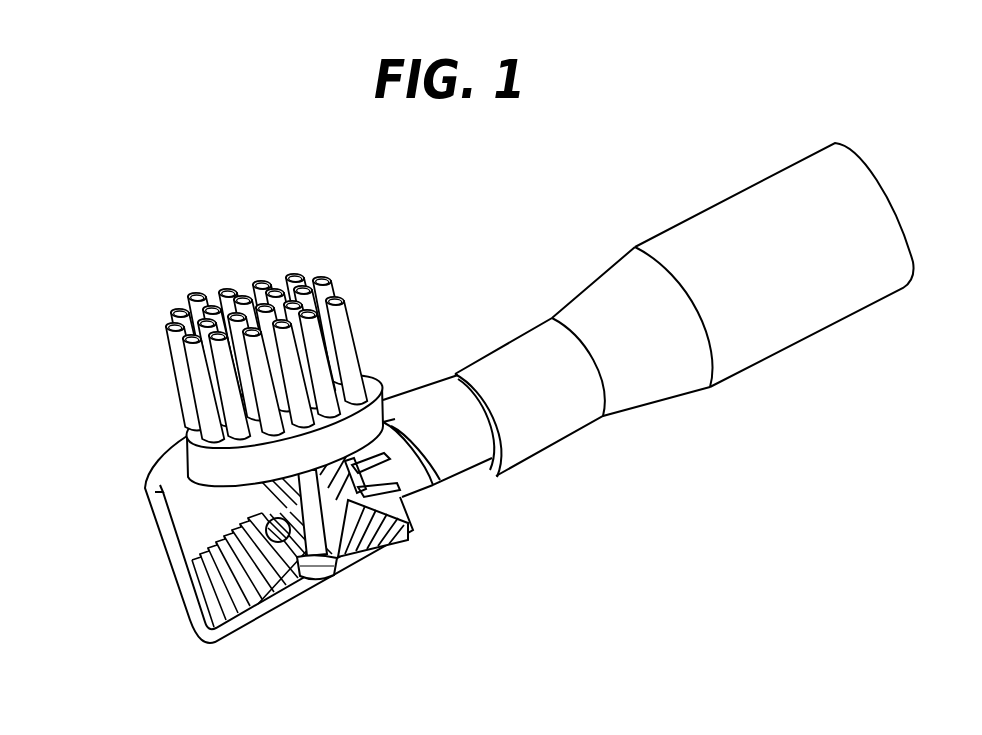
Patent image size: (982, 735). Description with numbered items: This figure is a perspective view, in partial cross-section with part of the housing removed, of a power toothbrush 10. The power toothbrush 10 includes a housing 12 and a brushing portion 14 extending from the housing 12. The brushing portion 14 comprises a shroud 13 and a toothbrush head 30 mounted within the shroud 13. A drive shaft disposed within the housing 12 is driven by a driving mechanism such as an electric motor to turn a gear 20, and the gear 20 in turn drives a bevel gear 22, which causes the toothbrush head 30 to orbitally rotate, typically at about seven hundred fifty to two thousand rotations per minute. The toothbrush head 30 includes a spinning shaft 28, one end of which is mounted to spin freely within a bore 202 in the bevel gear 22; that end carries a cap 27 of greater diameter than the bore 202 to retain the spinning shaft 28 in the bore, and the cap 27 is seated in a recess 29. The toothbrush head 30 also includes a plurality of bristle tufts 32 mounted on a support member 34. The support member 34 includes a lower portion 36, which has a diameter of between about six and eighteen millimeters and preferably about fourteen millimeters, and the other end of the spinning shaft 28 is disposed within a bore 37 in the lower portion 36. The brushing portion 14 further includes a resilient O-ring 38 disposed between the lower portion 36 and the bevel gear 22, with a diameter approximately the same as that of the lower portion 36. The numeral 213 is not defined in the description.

The power toothbrush 10 is at (220, 257).
The housing 12 is at (713, 197).
The shroud 13 is at (182, 561).
The brushing portion 14 is at (152, 387).
The gear 20 is at (413, 488).
The bevel gear 22 is at (367, 537).
The cap 27 is at (337, 562).
The spinning shaft 28 is at (326, 560).
The recess 29 is at (304, 576).
The toothbrush head 30 is at (365, 290).
The bristle tufts 32 is at (344, 340).
The support member 34 is at (366, 418).
The lower portion 36 is at (253, 490).
The bore 37 is at (372, 528).
The resilient O-ring 38 is at (250, 571).
The bore 202 is at (311, 580).
The bristle field 213 is at (320, 262).